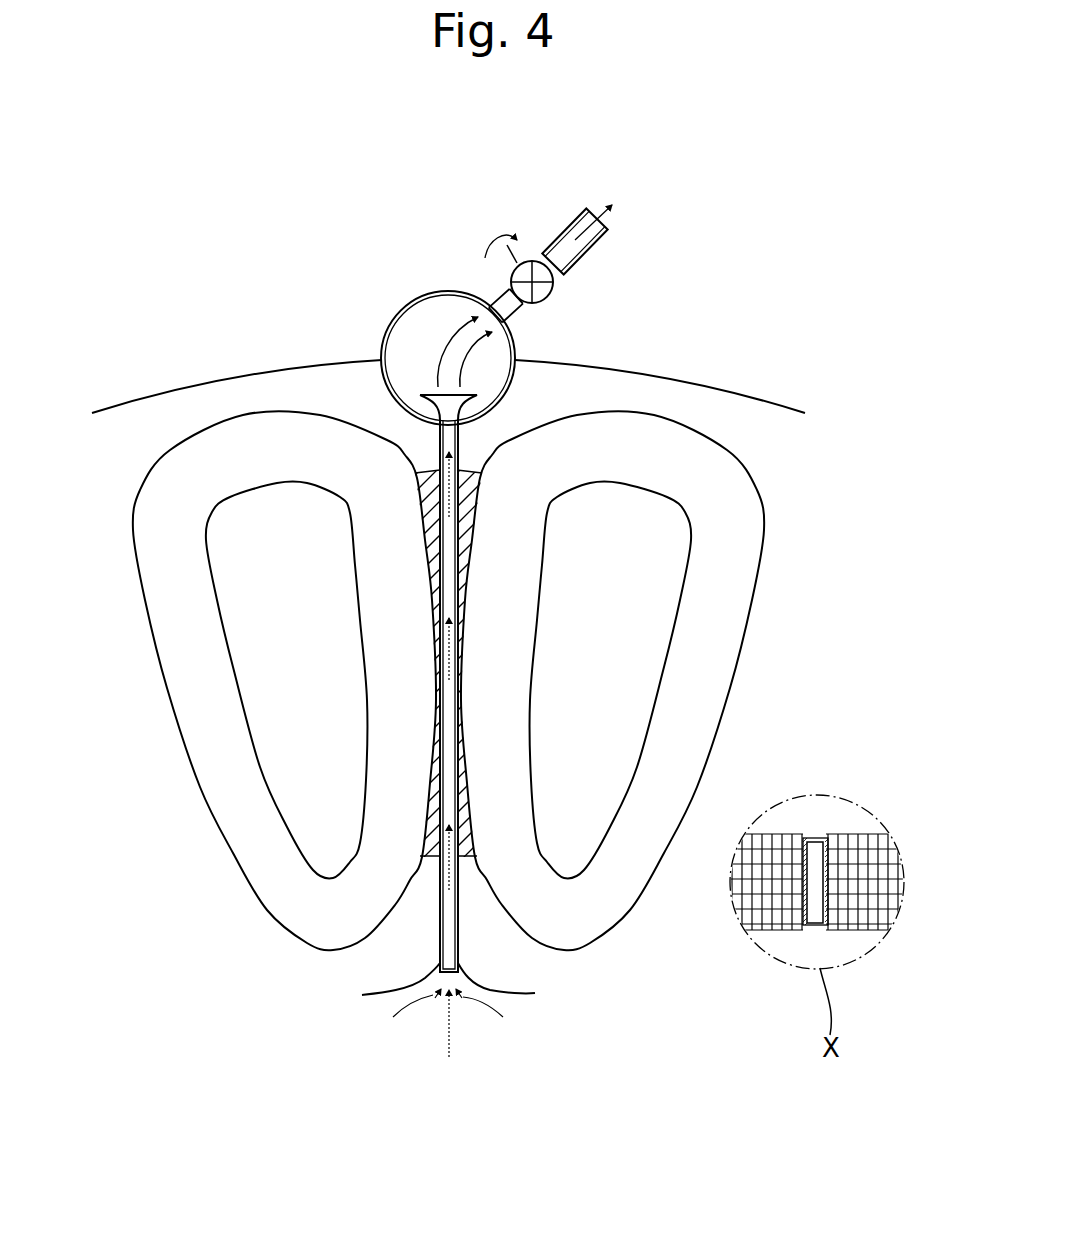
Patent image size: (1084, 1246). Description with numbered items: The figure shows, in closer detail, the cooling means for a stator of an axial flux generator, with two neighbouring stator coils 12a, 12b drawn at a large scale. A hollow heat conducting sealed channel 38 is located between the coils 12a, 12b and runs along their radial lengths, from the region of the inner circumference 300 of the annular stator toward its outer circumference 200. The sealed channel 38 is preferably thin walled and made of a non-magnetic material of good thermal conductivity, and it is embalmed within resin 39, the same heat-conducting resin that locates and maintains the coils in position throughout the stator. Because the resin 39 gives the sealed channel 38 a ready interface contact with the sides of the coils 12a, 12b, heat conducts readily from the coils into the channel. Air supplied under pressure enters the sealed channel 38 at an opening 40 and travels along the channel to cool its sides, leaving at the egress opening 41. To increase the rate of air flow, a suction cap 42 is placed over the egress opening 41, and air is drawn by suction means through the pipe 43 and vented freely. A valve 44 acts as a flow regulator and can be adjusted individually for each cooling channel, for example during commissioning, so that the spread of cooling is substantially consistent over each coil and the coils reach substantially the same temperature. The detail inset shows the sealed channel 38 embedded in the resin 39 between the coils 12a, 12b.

The stator coil 12a is at (205, 689).
The stator coil 12b is at (690, 690).
The hollow heat conducting sealed channel 38 is at (440, 910).
The resin 39 is at (433, 820).
The opening 40 is at (460, 977).
The opening 41 is at (432, 393).
The suction cap 42 is at (407, 302).
The pipe 43 is at (565, 262).
The valve 44 is at (525, 280).
The outer circumference 200 is at (672, 378).
The inner circumference 300 is at (377, 994).